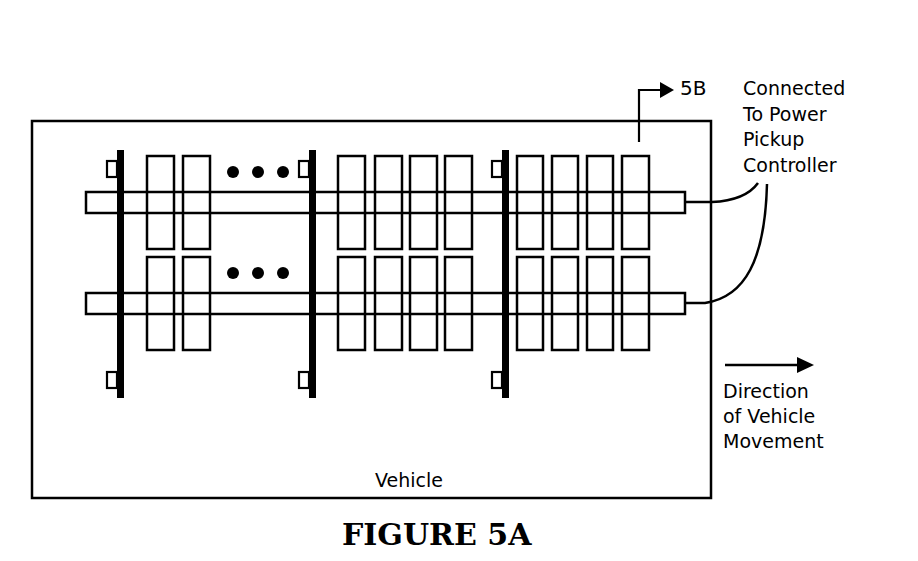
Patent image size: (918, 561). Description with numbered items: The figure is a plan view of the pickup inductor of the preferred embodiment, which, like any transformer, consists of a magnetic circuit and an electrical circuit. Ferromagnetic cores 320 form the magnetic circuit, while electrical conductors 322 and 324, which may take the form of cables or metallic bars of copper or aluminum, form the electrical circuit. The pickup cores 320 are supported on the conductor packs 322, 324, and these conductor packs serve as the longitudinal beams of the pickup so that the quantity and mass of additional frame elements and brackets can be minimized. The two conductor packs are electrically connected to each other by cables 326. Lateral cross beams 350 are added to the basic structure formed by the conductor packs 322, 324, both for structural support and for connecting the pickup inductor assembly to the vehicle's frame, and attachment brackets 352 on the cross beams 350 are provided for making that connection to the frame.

The ferromagnetic cores 320 is at (460, 157).
The conductor pack 322 is at (93, 192).
The conductor pack 324 is at (97, 314).
The cables 326 is at (366, 255).
The lateral cross beams 350 is at (313, 150).
The attachment brackets 352 is at (114, 160).